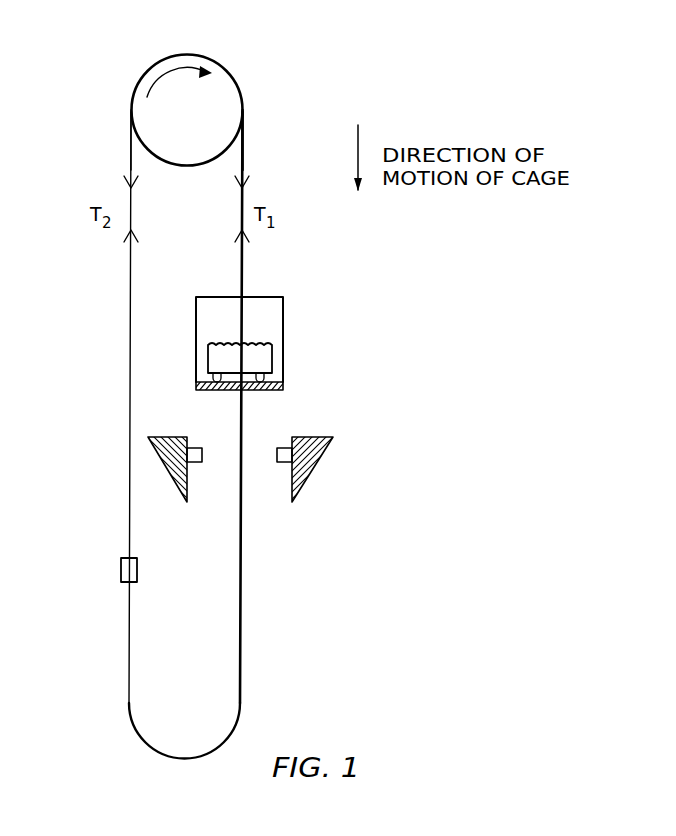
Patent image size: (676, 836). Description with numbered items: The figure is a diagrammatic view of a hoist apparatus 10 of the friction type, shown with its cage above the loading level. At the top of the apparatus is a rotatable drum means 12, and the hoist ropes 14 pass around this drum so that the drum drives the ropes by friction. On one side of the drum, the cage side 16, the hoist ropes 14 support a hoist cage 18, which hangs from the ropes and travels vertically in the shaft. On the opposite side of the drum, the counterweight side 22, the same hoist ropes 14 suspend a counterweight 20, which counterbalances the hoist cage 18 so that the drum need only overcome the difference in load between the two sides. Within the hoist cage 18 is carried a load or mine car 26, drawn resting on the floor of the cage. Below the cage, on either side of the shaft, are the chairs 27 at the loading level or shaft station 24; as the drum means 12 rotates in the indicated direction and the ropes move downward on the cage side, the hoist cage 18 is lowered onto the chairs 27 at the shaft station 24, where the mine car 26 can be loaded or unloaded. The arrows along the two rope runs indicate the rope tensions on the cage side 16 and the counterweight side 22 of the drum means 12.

The hoist apparatus 10 is at (303, 66).
The drum means 12 is at (206, 55).
The hoist ropes 14 is at (128, 396).
The cage side 16 is at (243, 143).
The hoist cage 18 is at (283, 297).
The counterweight 20 is at (122, 582).
The counterweight side 22 is at (131, 157).
The loading level or shaft station 24 is at (172, 437).
The load or mine car 26 is at (262, 362).
The chairs 27 is at (201, 462).